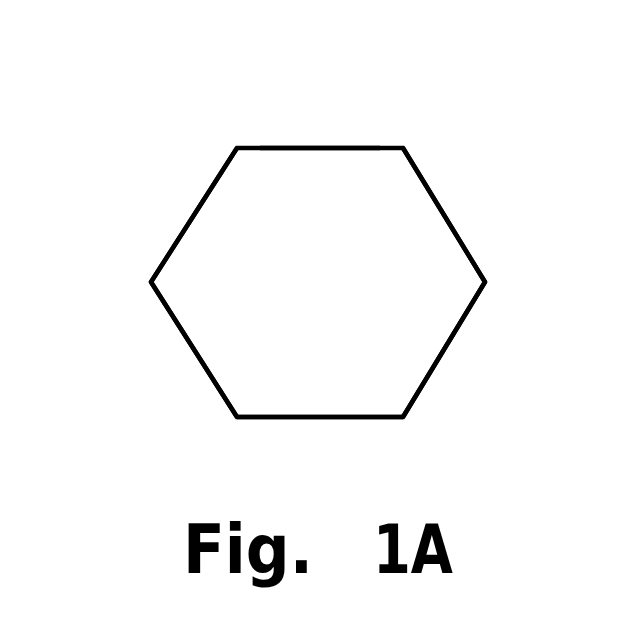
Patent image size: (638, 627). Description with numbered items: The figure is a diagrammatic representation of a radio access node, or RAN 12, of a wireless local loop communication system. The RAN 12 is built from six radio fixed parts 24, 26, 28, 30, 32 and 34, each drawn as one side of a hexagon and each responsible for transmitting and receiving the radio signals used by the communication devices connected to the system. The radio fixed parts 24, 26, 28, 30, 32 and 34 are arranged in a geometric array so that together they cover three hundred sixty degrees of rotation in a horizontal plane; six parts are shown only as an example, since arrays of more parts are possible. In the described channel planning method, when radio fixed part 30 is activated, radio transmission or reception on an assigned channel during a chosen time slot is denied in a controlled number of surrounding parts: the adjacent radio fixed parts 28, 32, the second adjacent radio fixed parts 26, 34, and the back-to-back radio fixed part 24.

The radio access node (RAN) 12 is at (174, 110).
The radio fixed part 24 is at (445, 348).
The radio fixed part 26 is at (320, 420).
The radio fixed part 28 is at (190, 348).
The radio fixed part 30 is at (193, 212).
The radio fixed part 32 is at (315, 147).
The radio fixed part 34 is at (445, 212).